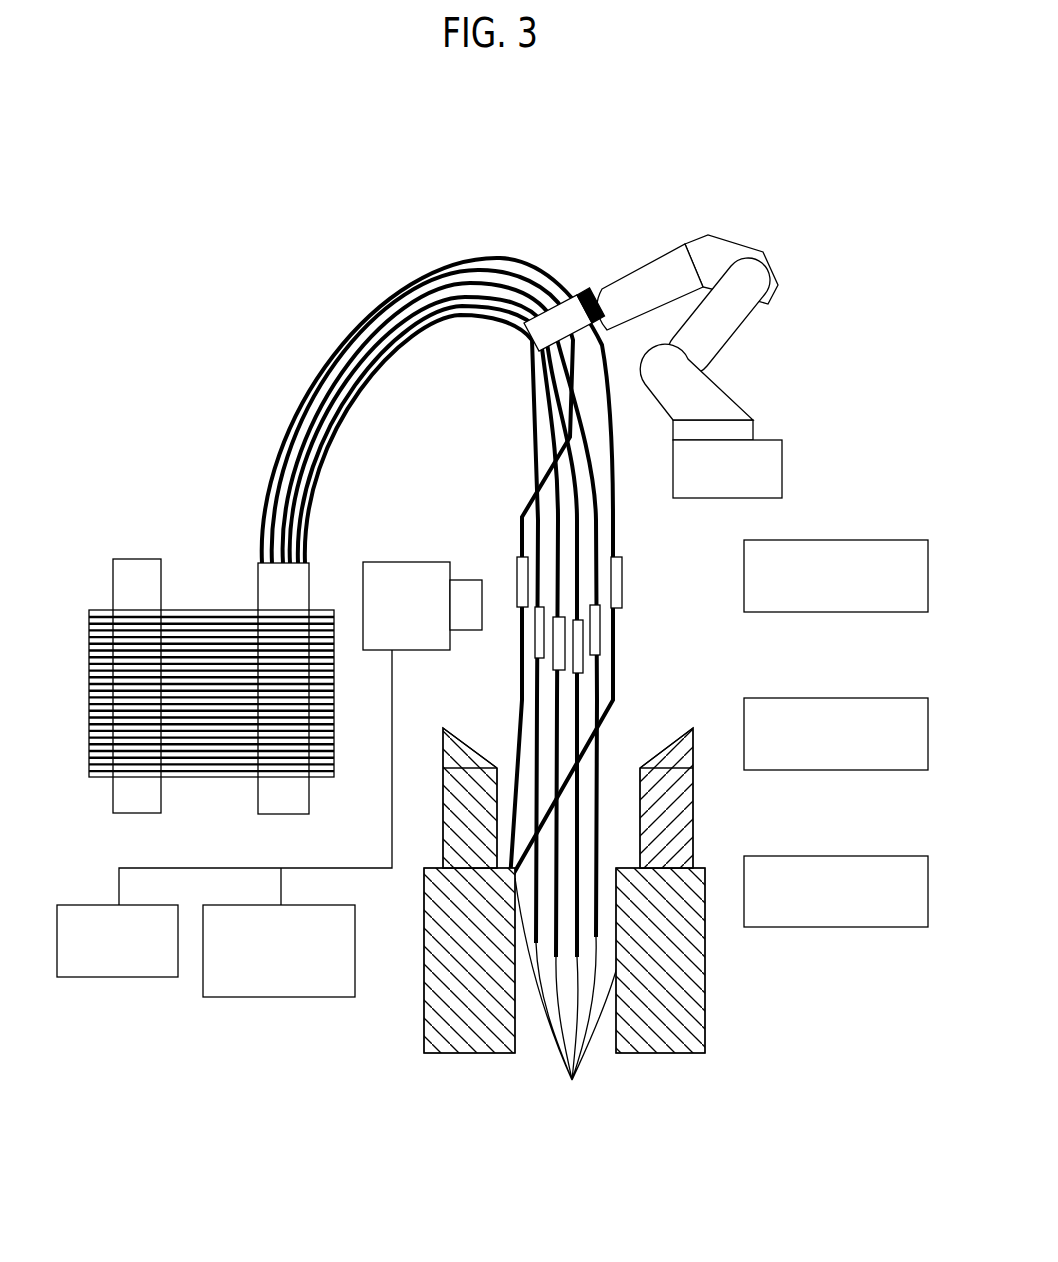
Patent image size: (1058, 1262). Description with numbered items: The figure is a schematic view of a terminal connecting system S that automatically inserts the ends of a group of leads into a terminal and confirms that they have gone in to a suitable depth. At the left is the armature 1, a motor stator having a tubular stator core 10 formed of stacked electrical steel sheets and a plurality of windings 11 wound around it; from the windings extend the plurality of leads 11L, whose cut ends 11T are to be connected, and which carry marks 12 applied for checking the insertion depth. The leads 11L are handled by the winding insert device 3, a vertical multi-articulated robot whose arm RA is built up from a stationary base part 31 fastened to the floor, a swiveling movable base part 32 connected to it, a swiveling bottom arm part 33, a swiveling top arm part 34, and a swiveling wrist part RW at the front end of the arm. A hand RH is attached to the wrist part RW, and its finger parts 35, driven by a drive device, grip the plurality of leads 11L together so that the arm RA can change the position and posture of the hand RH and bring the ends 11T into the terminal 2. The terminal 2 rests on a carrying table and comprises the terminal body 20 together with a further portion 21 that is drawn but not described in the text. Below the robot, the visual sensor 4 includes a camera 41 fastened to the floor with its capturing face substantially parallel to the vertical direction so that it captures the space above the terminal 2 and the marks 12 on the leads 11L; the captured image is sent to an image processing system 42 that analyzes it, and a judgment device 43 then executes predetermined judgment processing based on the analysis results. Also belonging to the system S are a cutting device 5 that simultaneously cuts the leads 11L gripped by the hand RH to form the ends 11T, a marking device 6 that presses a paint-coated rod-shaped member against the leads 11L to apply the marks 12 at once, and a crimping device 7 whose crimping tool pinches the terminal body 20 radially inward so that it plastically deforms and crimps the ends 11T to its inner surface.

The terminal connecting system S is at (141, 281).
The armature 1 is at (86, 548).
The stator core 10 is at (88, 626).
The windings 11 is at (161, 792).
The leads 11L is at (423, 297).
The ends of the leads 11T is at (574, 997).
The marks 12 is at (556, 652).
The terminal 2 is at (707, 858).
The terminal body 20 is at (692, 1010).
The upper clamp blocks 21 is at (670, 793).
The winding insert device 3 is at (748, 234).
The stationary base part 31 is at (760, 474).
The movable base part 32 is at (713, 408).
The bottom arm part 33 is at (733, 318).
The top arm part 34 is at (665, 278).
The finger parts 35 is at (535, 342).
The arm RA is at (722, 359).
The hand RH is at (529, 297).
The wrist part RW is at (580, 288).
The visual sensor 4 is at (385, 549).
The camera 41 is at (430, 642).
The image processing system 42 is at (328, 997).
The judgment device 43 is at (150, 977).
The cutting device 5 is at (907, 540).
The marking device 6 is at (907, 698).
The crimping device 7 is at (907, 856).